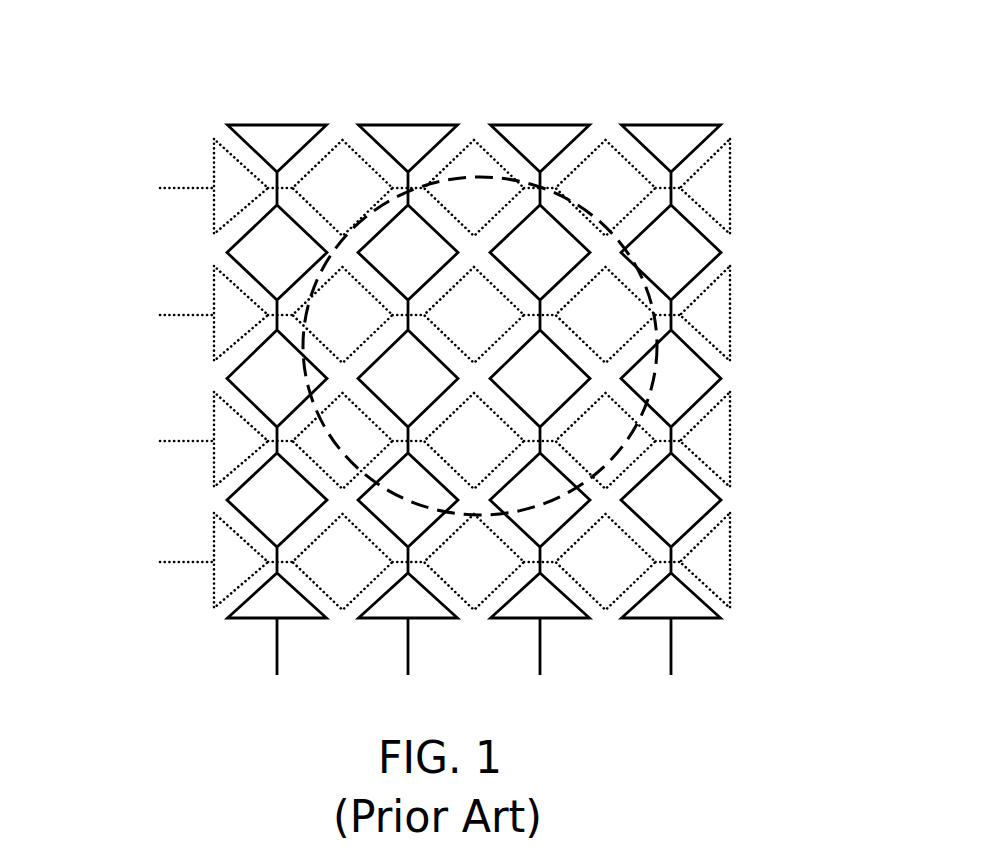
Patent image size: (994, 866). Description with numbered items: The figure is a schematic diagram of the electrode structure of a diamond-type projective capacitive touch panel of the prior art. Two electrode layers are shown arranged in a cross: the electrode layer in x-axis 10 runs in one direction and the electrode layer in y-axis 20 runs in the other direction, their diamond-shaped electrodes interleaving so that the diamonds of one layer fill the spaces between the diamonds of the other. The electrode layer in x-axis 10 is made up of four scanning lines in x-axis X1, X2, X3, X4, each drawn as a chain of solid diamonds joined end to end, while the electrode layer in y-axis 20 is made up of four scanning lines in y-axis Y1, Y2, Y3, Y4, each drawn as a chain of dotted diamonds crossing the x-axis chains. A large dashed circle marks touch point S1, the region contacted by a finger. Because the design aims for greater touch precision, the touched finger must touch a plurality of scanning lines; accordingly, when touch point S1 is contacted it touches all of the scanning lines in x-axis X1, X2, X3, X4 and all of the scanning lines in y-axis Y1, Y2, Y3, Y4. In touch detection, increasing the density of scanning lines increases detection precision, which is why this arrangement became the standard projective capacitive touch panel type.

The electrode layer in x-axis 10 is at (439, 420).
The electrode layer in y-axis 20 is at (419, 360).
The touch point S1 is at (588, 207).
The scanning line in x-axis X1 is at (277, 400).
The scanning line in x-axis X2 is at (408, 400).
The scanning line in x-axis X3 is at (540, 400).
The scanning line in x-axis X4 is at (671, 400).
The scanning line in y-axis Y1 is at (445, 187).
The scanning line in y-axis Y2 is at (445, 314).
The scanning line in y-axis Y3 is at (445, 440).
The scanning line in y-axis Y4 is at (445, 561).